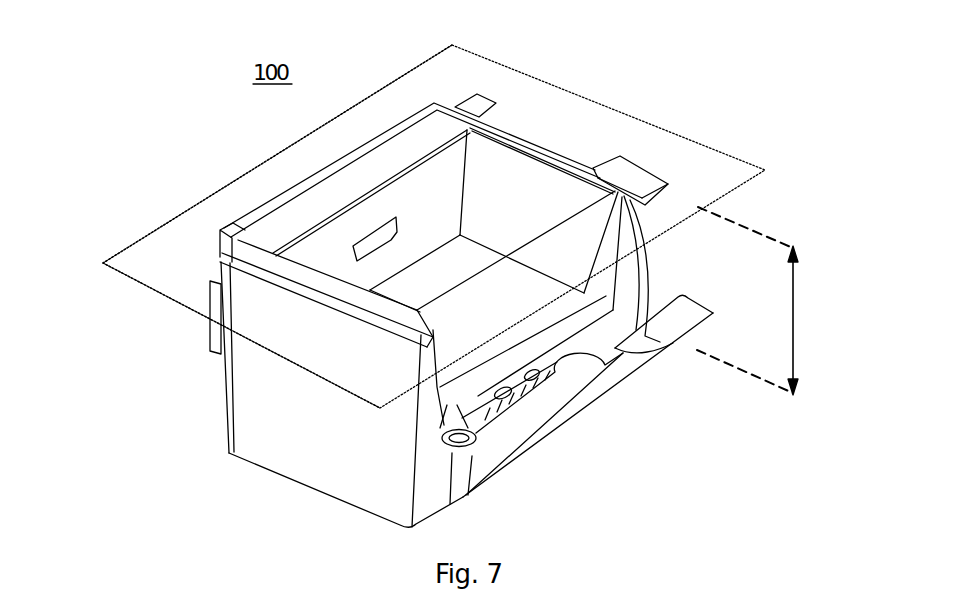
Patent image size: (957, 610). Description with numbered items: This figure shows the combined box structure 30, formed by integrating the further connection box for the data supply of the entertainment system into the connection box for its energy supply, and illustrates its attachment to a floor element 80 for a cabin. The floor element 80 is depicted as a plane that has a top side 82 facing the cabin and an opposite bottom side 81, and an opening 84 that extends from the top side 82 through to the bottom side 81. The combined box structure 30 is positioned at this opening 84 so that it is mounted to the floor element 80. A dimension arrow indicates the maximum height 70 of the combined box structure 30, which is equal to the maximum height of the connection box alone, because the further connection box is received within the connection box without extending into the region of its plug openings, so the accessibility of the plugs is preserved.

The floor element 80 is at (288, 160).
The bottom side 81 is at (143, 288).
The top side 82 is at (145, 250).
The opening 84 is at (512, 180).
The maximum height 70 is at (793, 322).
The combined box structure 30 is at (172, 403).